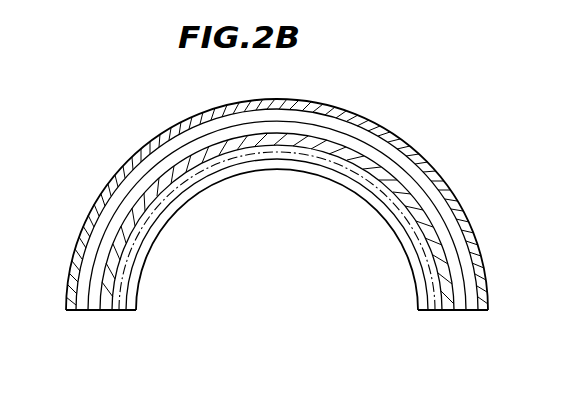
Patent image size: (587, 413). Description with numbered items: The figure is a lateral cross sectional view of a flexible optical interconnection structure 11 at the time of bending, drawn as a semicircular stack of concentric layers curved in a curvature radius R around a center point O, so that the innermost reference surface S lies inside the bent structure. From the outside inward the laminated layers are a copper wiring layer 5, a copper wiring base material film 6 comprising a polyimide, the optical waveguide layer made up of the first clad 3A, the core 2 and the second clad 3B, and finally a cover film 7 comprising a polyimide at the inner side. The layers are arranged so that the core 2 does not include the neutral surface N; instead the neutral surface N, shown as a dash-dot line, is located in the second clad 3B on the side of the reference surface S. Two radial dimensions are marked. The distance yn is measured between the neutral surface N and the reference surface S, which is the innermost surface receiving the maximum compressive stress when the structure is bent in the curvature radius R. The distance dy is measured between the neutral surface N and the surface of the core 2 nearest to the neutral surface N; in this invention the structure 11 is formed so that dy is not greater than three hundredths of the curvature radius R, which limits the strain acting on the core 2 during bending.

The flexible optical interconnection structure 11 is at (106, 141).
The copper wiring layer 5 is at (70, 311).
The copper wiring base material film 6 is at (80, 311).
The core 2 is at (102, 311).
The first clad 3A is at (90, 311).
The second clad 3B is at (116, 311).
The cover film 7 is at (130, 311).
The neutral surface N is at (437, 314).
The curvature radius R is at (408, 256).
The distance between neutral surface and reference surface yn is at (170, 148).
The distance between neutral surface and core surface dy is at (105, 213).